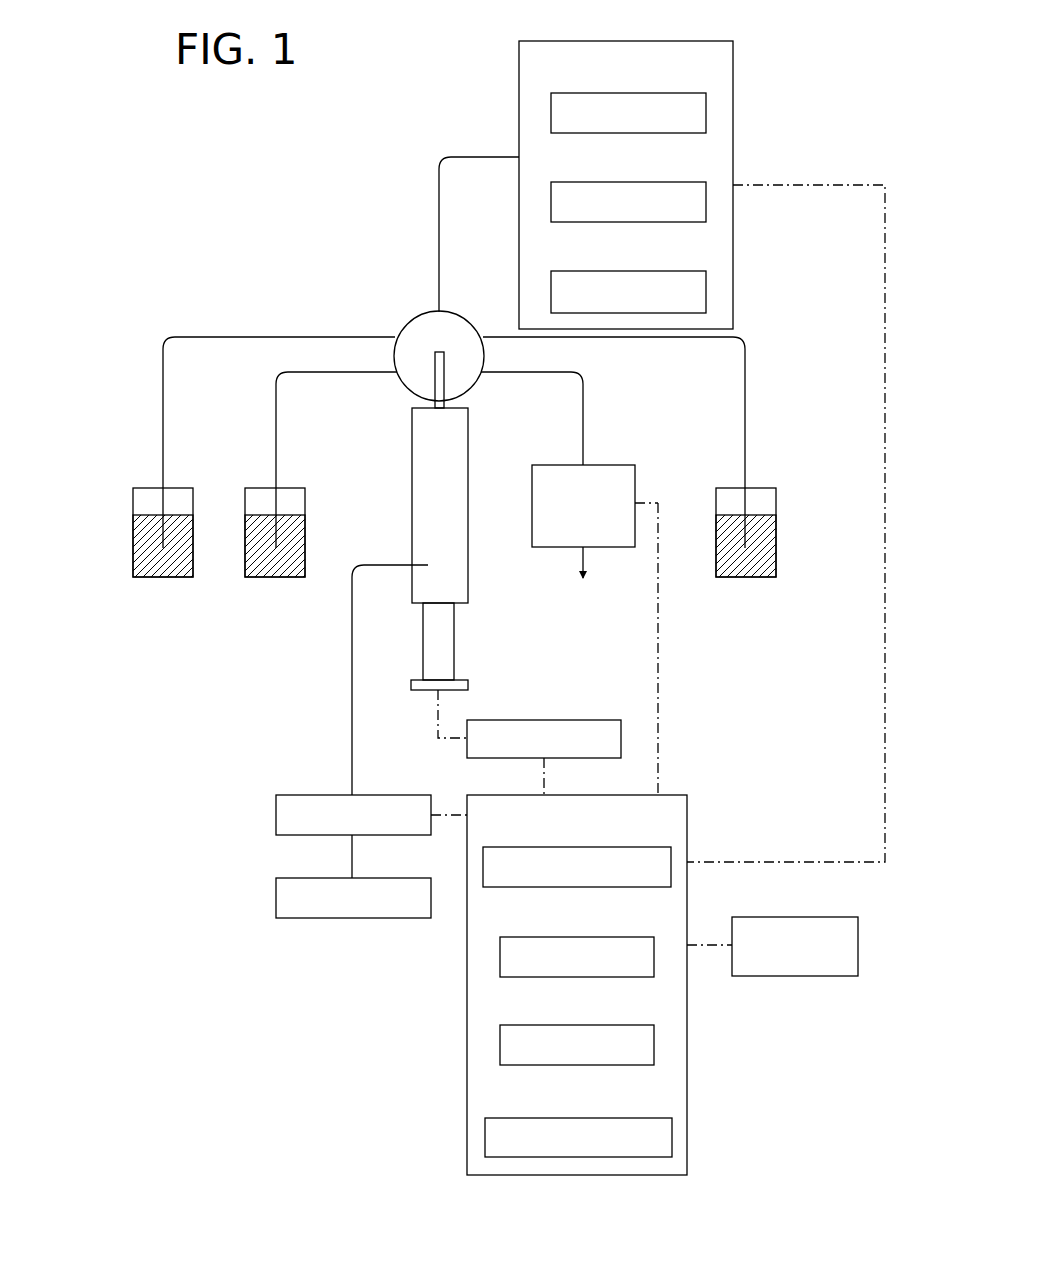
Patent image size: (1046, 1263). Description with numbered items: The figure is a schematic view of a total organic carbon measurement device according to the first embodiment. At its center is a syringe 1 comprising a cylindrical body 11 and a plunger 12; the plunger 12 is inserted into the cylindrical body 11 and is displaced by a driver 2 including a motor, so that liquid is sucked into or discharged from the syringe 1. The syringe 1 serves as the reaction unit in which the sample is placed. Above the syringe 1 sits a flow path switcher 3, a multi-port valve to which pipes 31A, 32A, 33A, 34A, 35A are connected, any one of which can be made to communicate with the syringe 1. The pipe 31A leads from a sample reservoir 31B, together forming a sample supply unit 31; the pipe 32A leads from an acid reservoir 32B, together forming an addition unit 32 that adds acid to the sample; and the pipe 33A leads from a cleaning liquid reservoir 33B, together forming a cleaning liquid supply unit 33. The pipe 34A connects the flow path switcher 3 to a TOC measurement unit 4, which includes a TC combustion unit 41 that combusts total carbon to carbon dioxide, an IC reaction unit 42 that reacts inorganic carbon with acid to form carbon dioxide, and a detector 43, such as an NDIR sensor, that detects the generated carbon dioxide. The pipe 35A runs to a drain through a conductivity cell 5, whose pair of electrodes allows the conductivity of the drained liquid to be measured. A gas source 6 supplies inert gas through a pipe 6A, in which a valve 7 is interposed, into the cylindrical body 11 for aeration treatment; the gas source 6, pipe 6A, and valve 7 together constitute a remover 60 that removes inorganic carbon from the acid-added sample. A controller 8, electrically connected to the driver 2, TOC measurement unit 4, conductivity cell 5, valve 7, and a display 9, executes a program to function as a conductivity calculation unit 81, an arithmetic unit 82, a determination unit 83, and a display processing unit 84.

The syringe 1 is at (446, 521).
The driver 2 is at (583, 720).
The flow path switcher 3 is at (423, 320).
The TOC measurement unit 4 is at (733, 41).
The conductivity cell 5 is at (629, 465).
The gas source 6 is at (276, 895).
The valve 7 is at (276, 815).
The controller 8 is at (676, 706).
The display 9 is at (838, 976).
The cylindrical body 11 is at (468, 562).
The plunger 12 is at (455, 638).
The sample supply unit 31 is at (213, 470).
The pipe 31A is at (163, 393).
The sample reservoir 31B is at (133, 540).
The addition unit 32 is at (286, 487).
The pipe 32A is at (276, 423).
The acid reservoir 32B is at (306, 533).
The cleaning liquid supply unit 33 is at (678, 473).
The pipe 33A is at (745, 415).
The cleaning liquid reservoir 33B is at (776, 535).
The pipe 34A is at (439, 188).
The pipe 35A is at (583, 383).
The TC combustion unit 41 is at (680, 93).
The IC reaction unit 42 is at (680, 182).
The detector 43 is at (680, 271).
The remover 60 is at (320, 861).
The pipe 6A is at (352, 685).
The conductivity calculation unit 81 is at (630, 847).
The arithmetic unit 82 is at (630, 937).
The determination unit 83 is at (630, 1025).
The display processing unit 84 is at (630, 1118).